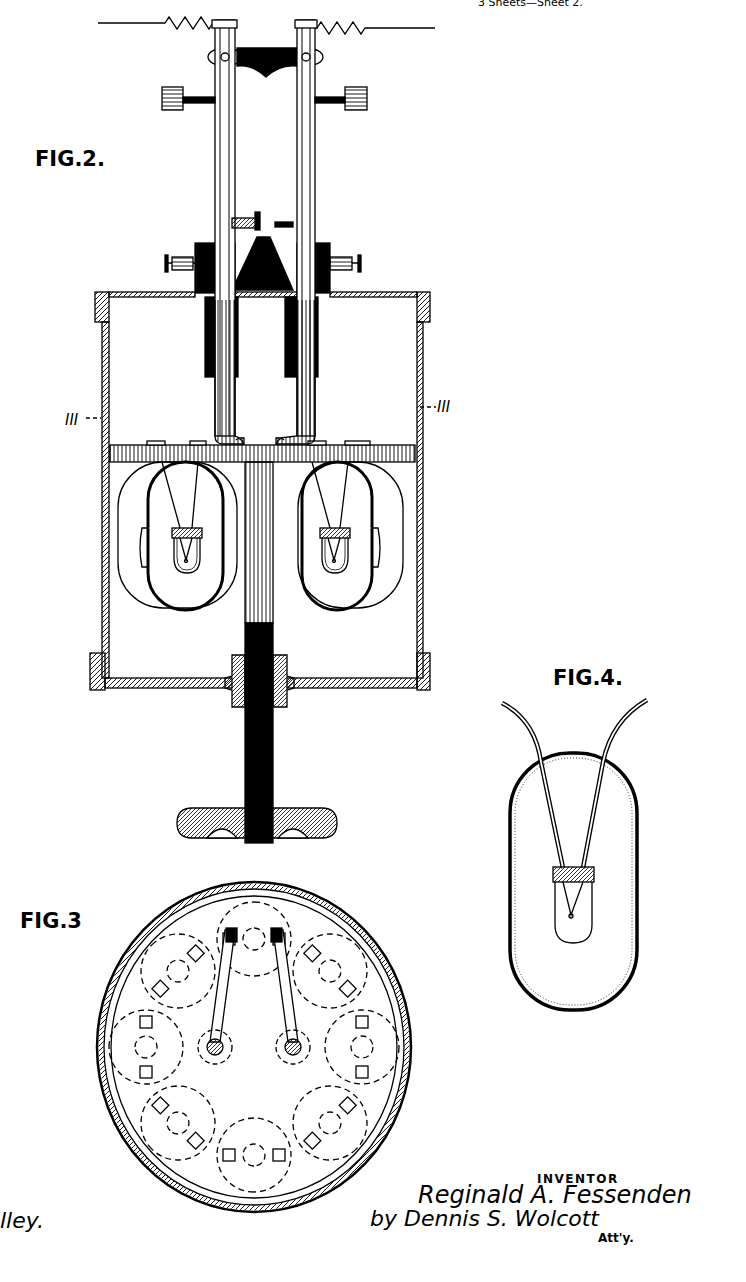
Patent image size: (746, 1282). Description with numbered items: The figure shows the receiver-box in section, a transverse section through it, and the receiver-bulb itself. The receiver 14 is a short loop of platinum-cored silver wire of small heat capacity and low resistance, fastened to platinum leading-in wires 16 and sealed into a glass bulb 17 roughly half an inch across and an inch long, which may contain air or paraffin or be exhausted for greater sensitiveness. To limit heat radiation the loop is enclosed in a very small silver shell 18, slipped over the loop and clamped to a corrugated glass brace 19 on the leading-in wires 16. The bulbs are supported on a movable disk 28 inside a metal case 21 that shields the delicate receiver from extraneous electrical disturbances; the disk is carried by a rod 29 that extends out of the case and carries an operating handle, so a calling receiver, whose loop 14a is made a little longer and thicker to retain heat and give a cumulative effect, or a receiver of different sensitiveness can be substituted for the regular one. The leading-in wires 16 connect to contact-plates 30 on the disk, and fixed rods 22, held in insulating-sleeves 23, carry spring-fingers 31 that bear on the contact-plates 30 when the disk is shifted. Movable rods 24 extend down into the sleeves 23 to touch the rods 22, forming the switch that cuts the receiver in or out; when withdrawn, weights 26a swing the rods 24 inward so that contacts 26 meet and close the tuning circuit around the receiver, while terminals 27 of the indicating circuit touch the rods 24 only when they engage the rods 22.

In FIG. 4, the receiver 14 is at (574, 918).
In FIG. 2, the loop 14a is at (186, 572).
In FIG. 2, the leading-in wires 16 is at (192, 503).
In FIG. 4, the leading-in wires 16 is at (600, 800).
In FIG. 2, the glass bulb 17 is at (175, 610).
In FIG. 4, the glass bulb 17 is at (510, 866).
In FIG. 2, the silver shell 18 is at (202, 561).
In FIG. 4, the silver shell 18 is at (558, 938).
In FIG. 2, the glass brace 19 is at (193, 528).
In FIG. 4, the glass brace 19 is at (572, 867).
In FIG. 2, the metal case 21 is at (103, 517).
In FIG. 3, the metal case 21 is at (96, 1055).
In FIG. 2, the rods 22 is at (213, 400).
In FIG. 3, the rods 22 is at (289, 1053).
In FIG. 2, the insulating-sleeves 23 is at (204, 325).
In FIG. 2, the movable rods 24 is at (215, 193).
In FIG. 2, the contacts 26 is at (283, 222).
In FIG. 2, the weights 26a is at (167, 112).
In FIG. 2, the terminals 27 is at (190, 272).
In FIG. 2, the movable disk 28 is at (400, 447).
In FIG. 3, the movable disk 28 is at (385, 1060).
In FIG. 2, the rod 29 is at (245, 625).
In FIG. 2, the contact-plates 30 is at (198, 444).
In FIG. 3, the contact-plates 30 is at (186, 956).
In FIG. 2, the spring-fingers 31 is at (282, 442).
In FIG. 3, the spring-fingers 31 is at (285, 1002).